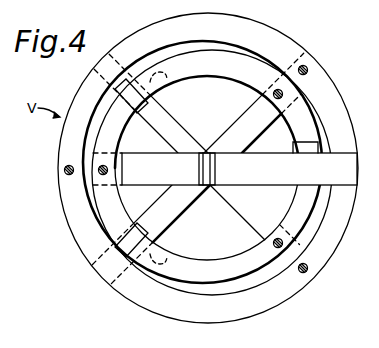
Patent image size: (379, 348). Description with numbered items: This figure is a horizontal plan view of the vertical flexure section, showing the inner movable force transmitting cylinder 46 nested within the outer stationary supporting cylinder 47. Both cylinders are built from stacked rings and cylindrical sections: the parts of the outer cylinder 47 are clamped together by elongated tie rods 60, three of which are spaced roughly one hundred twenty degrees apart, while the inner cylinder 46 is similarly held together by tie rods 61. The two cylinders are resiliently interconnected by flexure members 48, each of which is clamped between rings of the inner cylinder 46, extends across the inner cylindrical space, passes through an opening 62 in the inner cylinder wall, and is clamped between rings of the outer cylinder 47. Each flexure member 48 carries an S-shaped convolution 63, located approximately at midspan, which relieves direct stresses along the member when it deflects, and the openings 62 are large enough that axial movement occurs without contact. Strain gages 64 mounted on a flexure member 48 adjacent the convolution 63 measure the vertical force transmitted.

The inner movable force transmitting cylinder 46 is at (303, 120).
The outer stationary supporting cylinder 47 is at (340, 244).
The flexure member 48 is at (233, 216).
The tie rod 60 is at (64, 170).
The tie rod 61 is at (108, 170).
The opening 62 is at (303, 142).
The S-shaped convolution 63 is at (208, 151).
The strain gage 64 is at (140, 109).